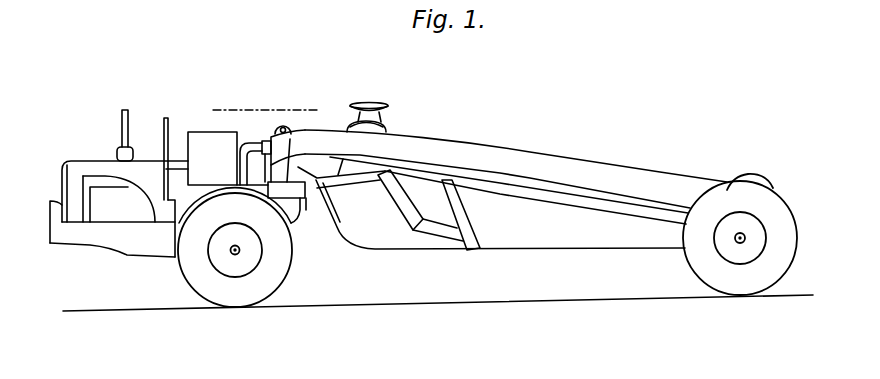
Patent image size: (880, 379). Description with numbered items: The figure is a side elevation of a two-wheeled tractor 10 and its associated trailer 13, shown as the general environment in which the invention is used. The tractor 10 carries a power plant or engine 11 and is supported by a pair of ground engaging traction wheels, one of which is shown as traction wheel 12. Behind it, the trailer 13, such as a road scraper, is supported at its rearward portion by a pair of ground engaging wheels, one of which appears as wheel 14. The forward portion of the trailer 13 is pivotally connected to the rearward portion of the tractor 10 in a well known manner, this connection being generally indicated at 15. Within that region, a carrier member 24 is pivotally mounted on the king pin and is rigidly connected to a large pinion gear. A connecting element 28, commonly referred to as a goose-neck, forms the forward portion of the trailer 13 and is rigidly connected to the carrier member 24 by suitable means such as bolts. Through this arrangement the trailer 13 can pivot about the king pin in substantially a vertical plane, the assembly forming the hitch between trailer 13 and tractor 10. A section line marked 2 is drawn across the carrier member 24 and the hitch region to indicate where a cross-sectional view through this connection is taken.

The section line 2- 2 is at (218, 93).
The two-wheeled tractor 10 is at (94, 137).
The power plant or engine 11 is at (118, 213).
The ground engaging traction wheel 12 is at (288, 268).
The trailer 13 is at (549, 150).
The ground engaging wheel 14 is at (697, 263).
The pivotal connection 15 is at (267, 127).
The carrier member 24 is at (268, 163).
The connecting element 28 is at (286, 190).